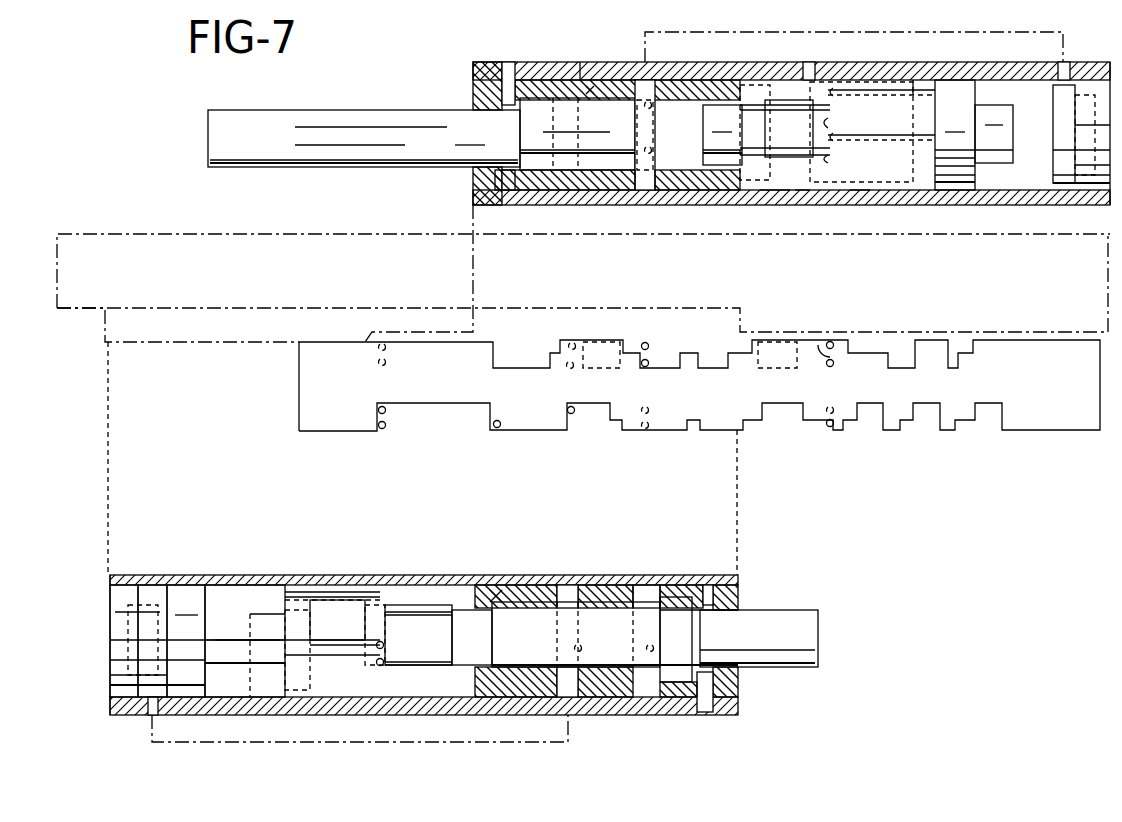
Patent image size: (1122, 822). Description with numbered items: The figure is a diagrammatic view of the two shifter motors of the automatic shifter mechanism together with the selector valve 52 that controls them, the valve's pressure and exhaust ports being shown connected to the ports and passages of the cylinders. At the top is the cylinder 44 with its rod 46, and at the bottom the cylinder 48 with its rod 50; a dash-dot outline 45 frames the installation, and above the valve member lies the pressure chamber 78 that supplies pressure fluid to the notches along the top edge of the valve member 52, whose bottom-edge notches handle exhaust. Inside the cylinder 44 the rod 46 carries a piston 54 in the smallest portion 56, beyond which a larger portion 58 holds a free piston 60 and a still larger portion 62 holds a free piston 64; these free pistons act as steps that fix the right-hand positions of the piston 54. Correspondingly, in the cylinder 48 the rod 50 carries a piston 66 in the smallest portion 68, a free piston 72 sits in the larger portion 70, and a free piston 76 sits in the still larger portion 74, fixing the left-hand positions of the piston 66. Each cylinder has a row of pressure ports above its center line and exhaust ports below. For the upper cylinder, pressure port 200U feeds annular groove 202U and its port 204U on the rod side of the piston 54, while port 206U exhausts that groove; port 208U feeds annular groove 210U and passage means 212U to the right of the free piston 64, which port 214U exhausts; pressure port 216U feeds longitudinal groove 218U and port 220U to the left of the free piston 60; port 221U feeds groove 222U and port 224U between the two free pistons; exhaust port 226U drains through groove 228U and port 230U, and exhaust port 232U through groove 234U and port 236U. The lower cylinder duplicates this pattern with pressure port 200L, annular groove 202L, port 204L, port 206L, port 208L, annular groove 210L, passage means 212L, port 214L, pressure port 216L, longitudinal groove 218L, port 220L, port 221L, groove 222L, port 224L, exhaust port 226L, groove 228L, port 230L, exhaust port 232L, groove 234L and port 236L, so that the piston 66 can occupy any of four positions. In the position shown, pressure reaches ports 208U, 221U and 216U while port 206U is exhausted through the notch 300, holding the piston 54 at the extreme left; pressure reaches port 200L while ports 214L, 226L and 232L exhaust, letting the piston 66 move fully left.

The cylinder 44 is at (474, 76).
The frame outline 45 is at (56, 254).
The rod 46 is at (282, 150).
The cylinder 48 is at (724, 710).
The rod 50 is at (813, 620).
The selector valve 52 is at (1056, 380).
The piston 54 is at (563, 160).
The smallest portion 56 is at (626, 92).
The larger portion 58 is at (854, 204).
The free piston 60 is at (795, 198).
The larger portion 62 is at (1067, 111).
The free piston 64 is at (972, 100).
The piston 66 is at (483, 624).
The smallest portion 68 is at (608, 668).
The larger portion 70 is at (340, 680).
The free piston 72 is at (274, 650).
The larger portion 74 is at (225, 692).
The free piston 76 is at (193, 644).
The pressure chamber 78 is at (560, 324).
The notch 300 is at (492, 422).
The pressure port 200U is at (598, 78).
The pressure port 200L is at (660, 335).
The annular groove 202U is at (560, 78).
The annular groove 202L is at (695, 585).
The port 204U is at (510, 192).
The port 204L is at (716, 602).
The port 206U is at (490, 152).
The port 206L is at (660, 403).
The port 208U is at (652, 108).
The port 208L is at (575, 348).
The annular groove 210U is at (637, 192).
The annular groove 210L is at (568, 584).
The passage means 212U is at (808, 32).
The passage means 212L is at (540, 748).
The port 214U is at (652, 152).
The port 214L is at (574, 414).
The pressure port 216U is at (830, 120).
The pressure port 216L is at (378, 364).
The longitudinal groove 218U is at (784, 110).
The longitudinal groove 218L is at (420, 610).
The port 220U is at (758, 108).
The port 220L is at (468, 606).
The port 221U is at (830, 86).
The port 221L is at (378, 348).
The groove 222U is at (892, 90).
The groove 222L is at (336, 596).
The port 224U is at (920, 90).
The port 224L is at (296, 597).
The exhaust port 226U is at (831, 160).
The exhaust port 226L is at (376, 424).
The groove 228U is at (790, 158).
The groove 228L is at (442, 676).
The port 230U is at (618, 182).
The port 230L is at (480, 682).
The exhaust port 232U is at (894, 144).
The exhaust port 232L is at (378, 410).
The groove 234U is at (850, 182).
The groove 234L is at (338, 648).
The port 236U is at (908, 136).
The port 236L is at (300, 654).